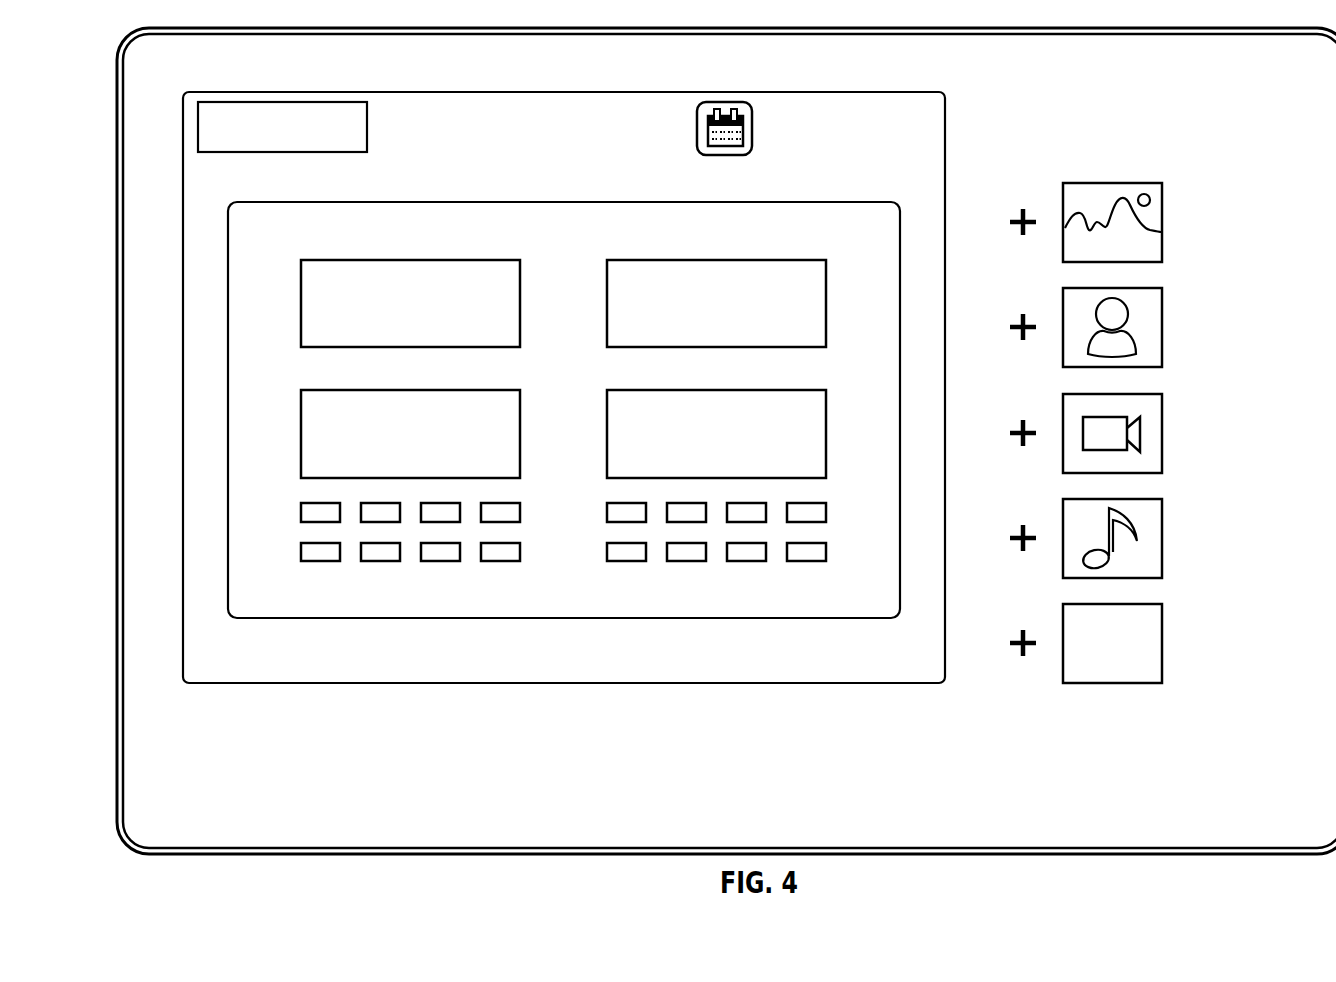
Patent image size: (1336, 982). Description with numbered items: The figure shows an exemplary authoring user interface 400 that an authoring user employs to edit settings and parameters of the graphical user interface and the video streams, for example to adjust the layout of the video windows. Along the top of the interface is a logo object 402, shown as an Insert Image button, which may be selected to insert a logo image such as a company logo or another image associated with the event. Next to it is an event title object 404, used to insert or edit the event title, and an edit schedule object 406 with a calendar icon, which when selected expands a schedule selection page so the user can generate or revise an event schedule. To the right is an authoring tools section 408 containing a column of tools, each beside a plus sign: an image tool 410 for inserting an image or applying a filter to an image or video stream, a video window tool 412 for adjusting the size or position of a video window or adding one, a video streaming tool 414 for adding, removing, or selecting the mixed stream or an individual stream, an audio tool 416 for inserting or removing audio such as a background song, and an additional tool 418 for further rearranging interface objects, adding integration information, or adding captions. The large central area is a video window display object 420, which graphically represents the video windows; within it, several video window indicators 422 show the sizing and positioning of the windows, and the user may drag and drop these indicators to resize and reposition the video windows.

The authoring user interface 400 is at (116, 133).
The logo object 402 is at (280, 102).
The event title object 404 is at (452, 110).
The edit schedule object 406 is at (815, 115).
The authoring tools section 408 is at (1243, 137).
The image tool 410 is at (1162, 213).
The video window tool 412 is at (1162, 318).
The video streaming tool 414 is at (1162, 424).
The audio tool 416 is at (1162, 529).
The additional tool 418 is at (1162, 634).
The video window display object 420 is at (228, 387).
The video window indicator 422 is at (362, 260).